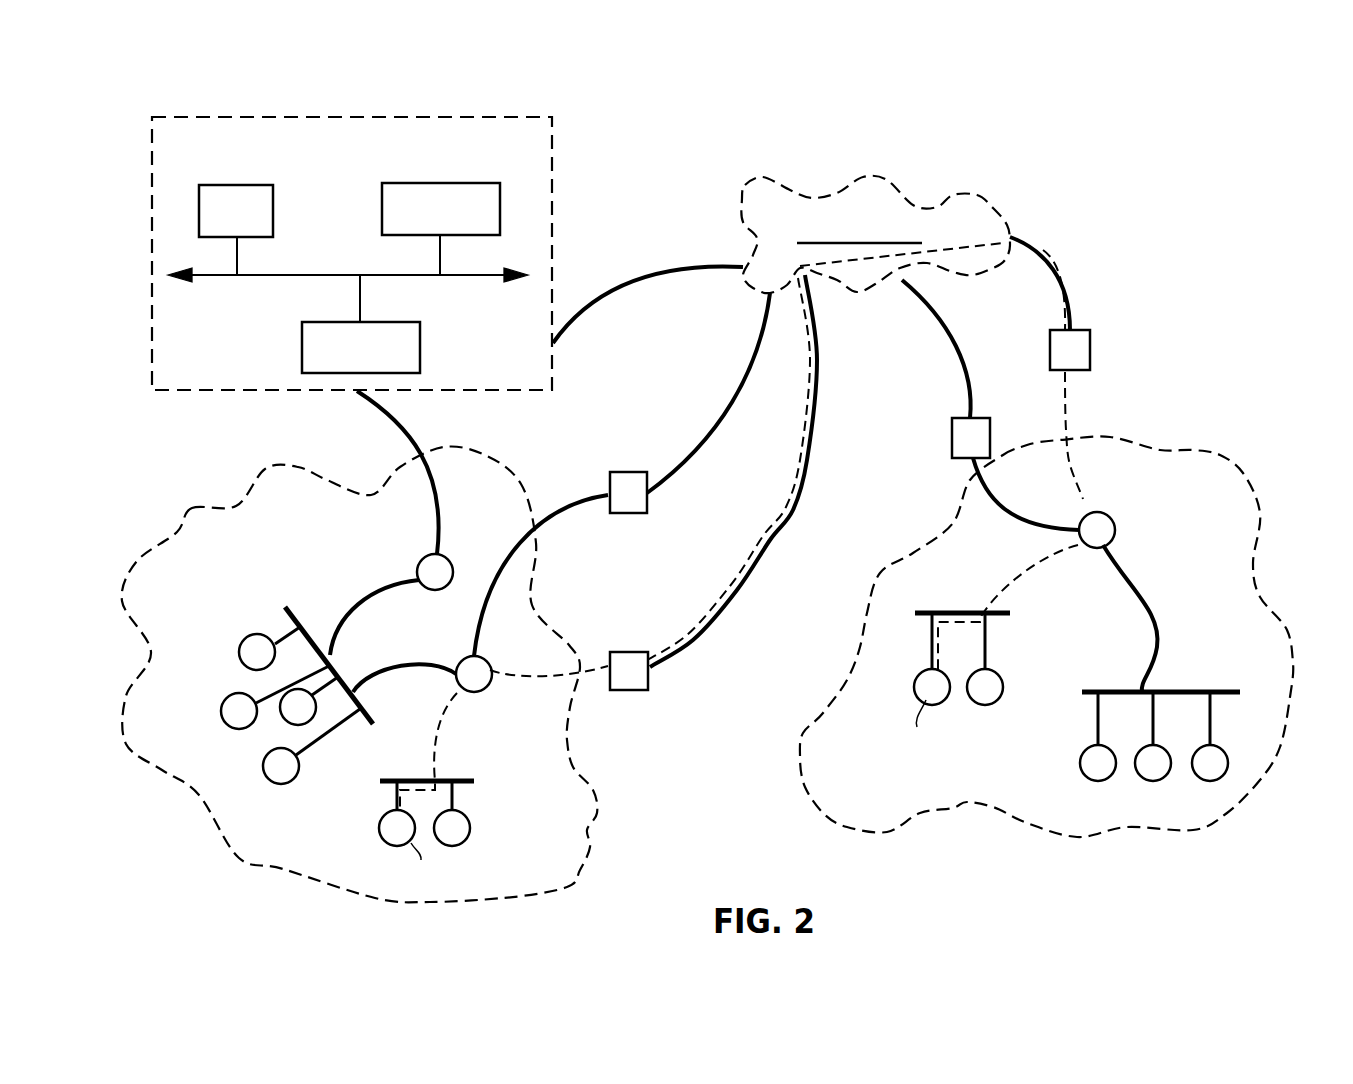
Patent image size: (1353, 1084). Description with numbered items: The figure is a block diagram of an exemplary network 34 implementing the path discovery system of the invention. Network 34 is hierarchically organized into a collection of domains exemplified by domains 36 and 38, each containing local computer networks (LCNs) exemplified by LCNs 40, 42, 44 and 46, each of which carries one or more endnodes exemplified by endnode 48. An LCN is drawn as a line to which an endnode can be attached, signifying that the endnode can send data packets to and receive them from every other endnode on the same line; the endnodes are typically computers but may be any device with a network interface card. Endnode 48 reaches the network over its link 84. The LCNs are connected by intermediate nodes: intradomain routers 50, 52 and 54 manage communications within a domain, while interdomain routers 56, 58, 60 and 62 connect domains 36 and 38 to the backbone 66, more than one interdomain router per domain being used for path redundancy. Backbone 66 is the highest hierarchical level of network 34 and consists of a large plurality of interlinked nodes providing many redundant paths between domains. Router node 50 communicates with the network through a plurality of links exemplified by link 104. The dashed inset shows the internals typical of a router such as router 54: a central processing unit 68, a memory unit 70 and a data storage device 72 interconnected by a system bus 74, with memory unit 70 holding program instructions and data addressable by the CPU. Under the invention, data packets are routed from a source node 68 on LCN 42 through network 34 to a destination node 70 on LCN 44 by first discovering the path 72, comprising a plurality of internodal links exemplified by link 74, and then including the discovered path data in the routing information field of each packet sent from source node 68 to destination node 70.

The network 34 is at (1170, 224).
The domain 36 is at (1200, 453).
The domain 38 is at (192, 508).
The local computer network 40 is at (301, 627).
The local computer network 42 is at (408, 777).
The local computer network 44 is at (947, 613).
The local computer network 46 is at (1207, 690).
The endnode 48 is at (263, 768).
The intradomain router 50 is at (484, 691).
The intradomain router 52 is at (1116, 531).
The intradomain router 54 is at (345, 117).
The interdomain router 56 is at (618, 472).
The interdomain router 58 is at (627, 652).
The interdomain router 60 is at (952, 437).
The interdomain router 62 is at (1090, 348).
The backbone 66 is at (1000, 206).
The central processing unit 68 is at (228, 185).
The memory unit 70 is at (382, 205).
The data storage device 72 is at (302, 336).
The system bus 74 is at (476, 277).
The link 84 is at (323, 744).
The link 104 is at (479, 622).